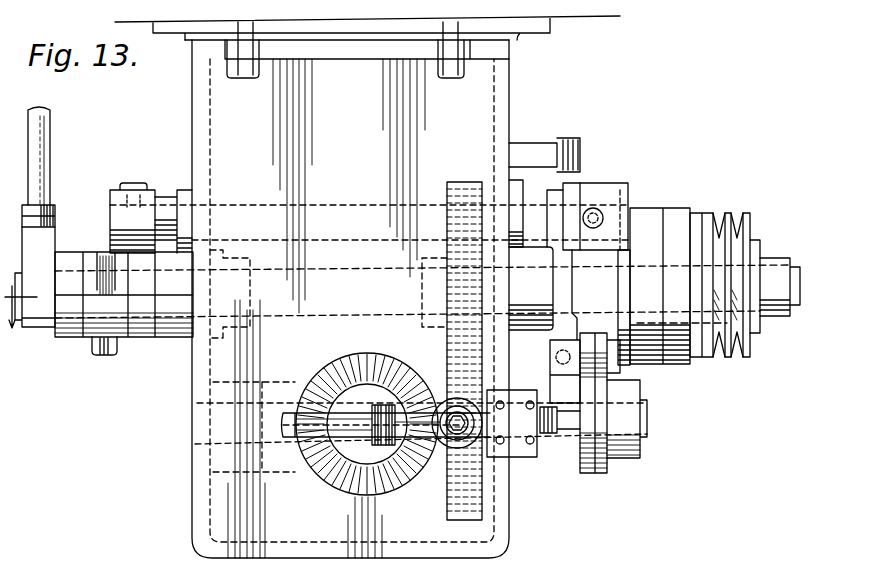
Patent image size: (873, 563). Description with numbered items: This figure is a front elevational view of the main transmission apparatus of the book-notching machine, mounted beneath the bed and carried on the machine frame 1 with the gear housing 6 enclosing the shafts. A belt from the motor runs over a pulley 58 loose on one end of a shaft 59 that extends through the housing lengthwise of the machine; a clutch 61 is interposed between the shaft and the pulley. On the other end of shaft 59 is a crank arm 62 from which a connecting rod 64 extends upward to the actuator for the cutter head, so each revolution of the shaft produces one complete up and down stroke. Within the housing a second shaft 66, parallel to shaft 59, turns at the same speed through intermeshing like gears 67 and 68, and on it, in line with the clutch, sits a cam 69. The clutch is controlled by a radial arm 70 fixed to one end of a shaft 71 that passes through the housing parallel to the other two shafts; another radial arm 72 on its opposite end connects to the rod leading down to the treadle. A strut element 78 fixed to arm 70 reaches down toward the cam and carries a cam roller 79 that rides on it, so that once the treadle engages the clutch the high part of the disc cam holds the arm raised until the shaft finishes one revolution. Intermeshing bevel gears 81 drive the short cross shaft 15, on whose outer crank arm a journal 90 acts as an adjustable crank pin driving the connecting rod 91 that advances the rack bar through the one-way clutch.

The machine bed plate 1 is at (548, 34).
The gear housing 6 is at (480, 108).
The spindle shaft 15 is at (774, 327).
The pulley 58 is at (730, 218).
The shaft 59 is at (277, 317).
The clutch 61 is at (648, 205).
The crank arm 62 is at (46, 243).
The connecting rod 64 is at (48, 142).
The shaft 66 is at (648, 420).
The gear 67 is at (508, 505).
The gear 68 is at (447, 192).
The cam 69 is at (598, 473).
The radial arm 70 is at (600, 183).
The shaft 71 is at (160, 215).
The radial arm 72 is at (111, 214).
The strut element 78 is at (566, 302).
The cam roller 79 is at (630, 376).
The bevel gears 81 is at (399, 367).
The journal 90 is at (446, 440).
The connecting rod 91 is at (292, 452).